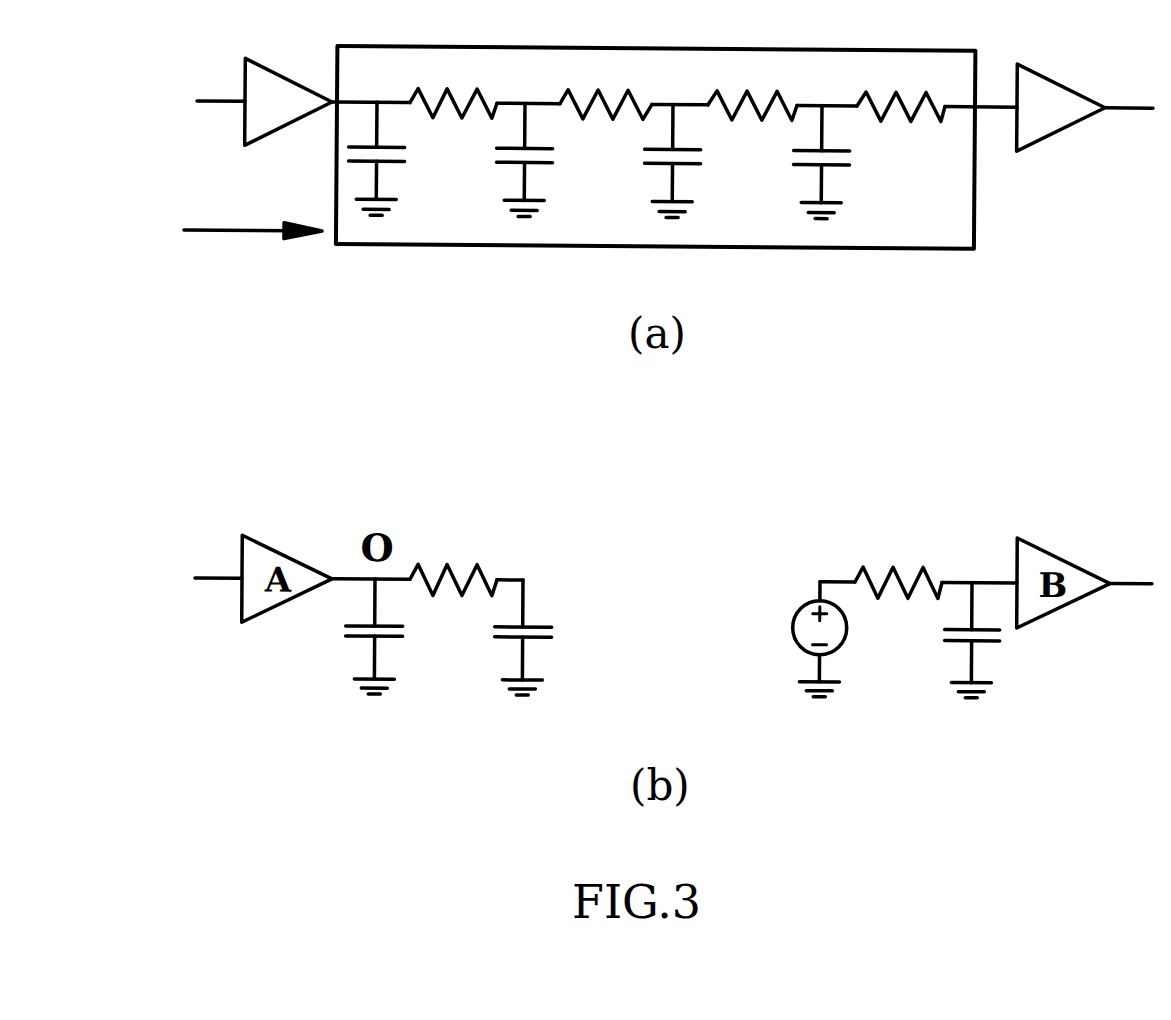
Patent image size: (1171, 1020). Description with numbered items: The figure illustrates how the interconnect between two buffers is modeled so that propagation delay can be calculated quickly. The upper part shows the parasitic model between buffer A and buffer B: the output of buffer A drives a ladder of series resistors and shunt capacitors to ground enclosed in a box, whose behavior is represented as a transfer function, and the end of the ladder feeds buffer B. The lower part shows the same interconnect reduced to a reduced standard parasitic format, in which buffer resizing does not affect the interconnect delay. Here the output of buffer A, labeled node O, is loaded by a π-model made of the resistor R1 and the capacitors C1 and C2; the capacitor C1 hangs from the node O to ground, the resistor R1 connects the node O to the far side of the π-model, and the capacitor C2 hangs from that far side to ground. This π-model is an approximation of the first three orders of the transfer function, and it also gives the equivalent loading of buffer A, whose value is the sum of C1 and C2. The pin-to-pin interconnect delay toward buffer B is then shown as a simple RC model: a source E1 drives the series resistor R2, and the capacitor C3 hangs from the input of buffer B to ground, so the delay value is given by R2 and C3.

The buffer A is at (265, 102).
The buffer B is at (1085, 108).
The output node of buffer A O is at (376, 142).
The resistor R1 is at (459, 553).
The resistor R2 is at (901, 556).
The capacitor C1 is at (414, 637).
The capacitor C2 is at (567, 638).
The capacitor C3 is at (944, 640).
The voltage source E1 is at (789, 639).